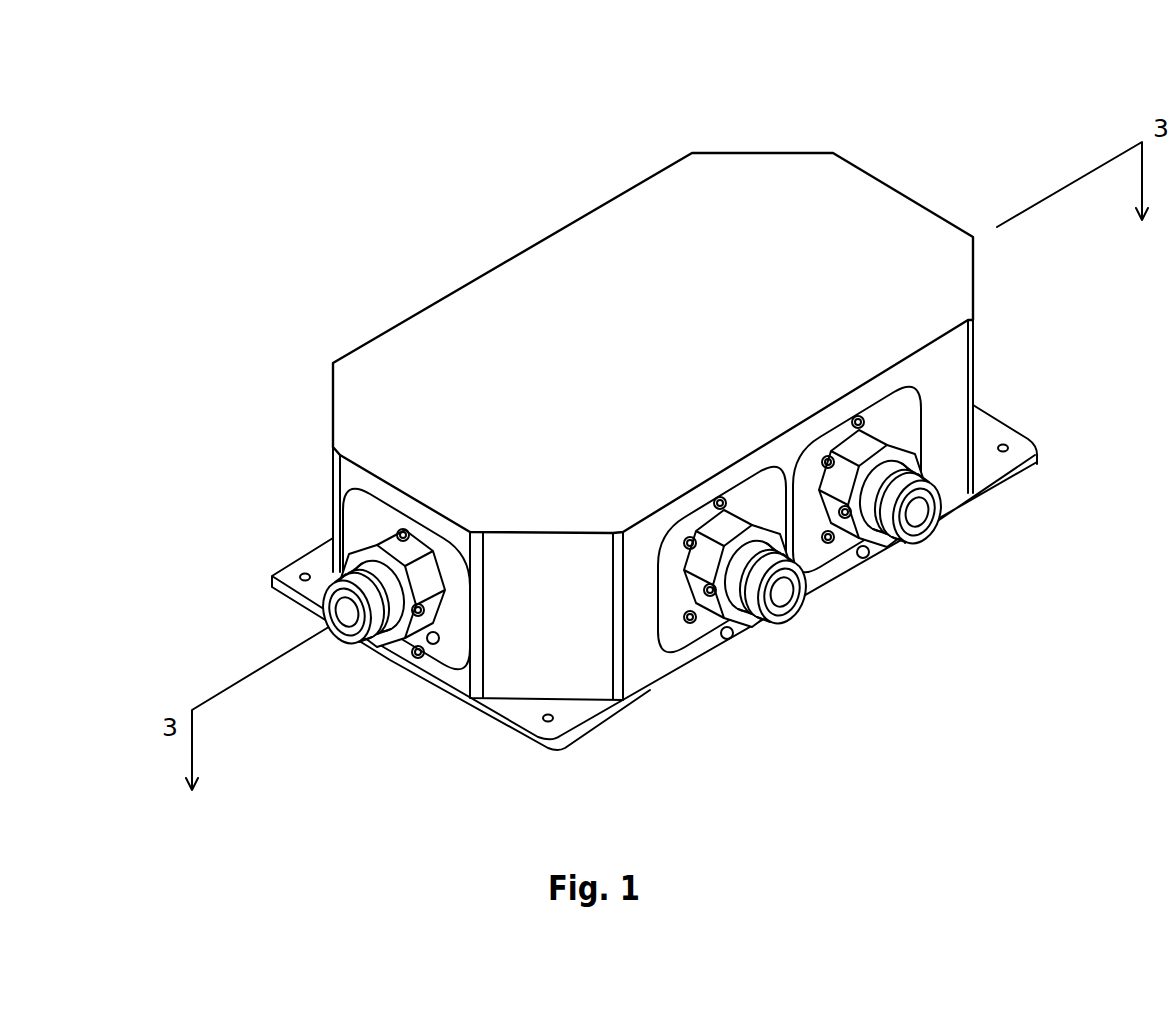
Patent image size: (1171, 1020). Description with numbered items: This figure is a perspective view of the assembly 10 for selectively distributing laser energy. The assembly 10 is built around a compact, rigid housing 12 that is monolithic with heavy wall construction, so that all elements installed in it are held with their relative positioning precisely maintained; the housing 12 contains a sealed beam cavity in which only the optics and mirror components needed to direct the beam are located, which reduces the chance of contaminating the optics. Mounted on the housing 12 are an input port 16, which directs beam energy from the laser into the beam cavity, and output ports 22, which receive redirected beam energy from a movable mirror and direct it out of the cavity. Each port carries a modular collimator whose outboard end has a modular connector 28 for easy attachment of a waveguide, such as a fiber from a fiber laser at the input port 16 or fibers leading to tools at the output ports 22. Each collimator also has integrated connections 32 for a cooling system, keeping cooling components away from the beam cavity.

The assembly for distributing laser energy 10 is at (845, 98).
The housing 12 is at (674, 336).
The input port 16 is at (453, 632).
The output port 22 is at (768, 512).
The modular connector 28 is at (340, 633).
The integrated connections 32 is at (427, 653).